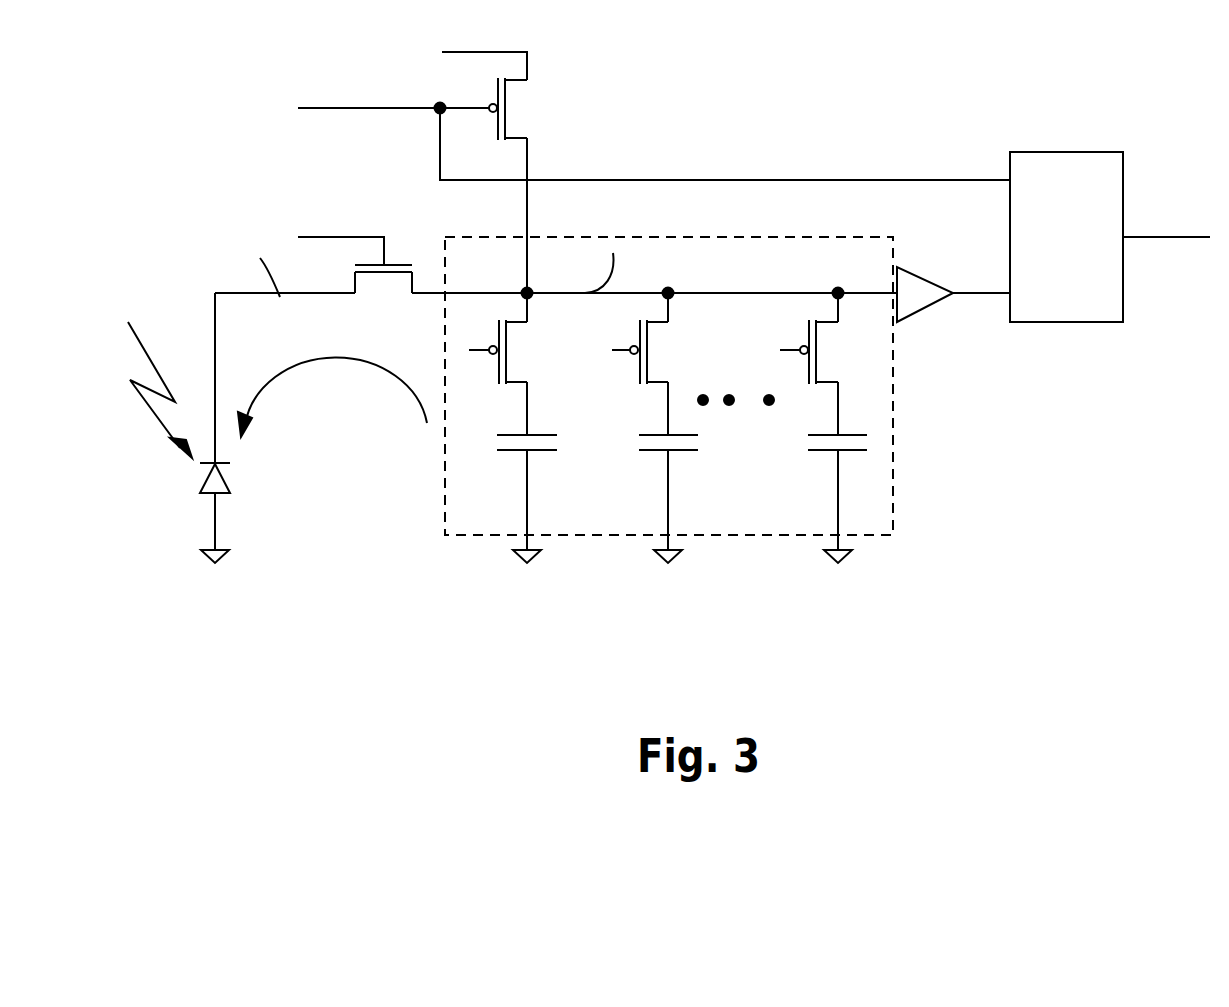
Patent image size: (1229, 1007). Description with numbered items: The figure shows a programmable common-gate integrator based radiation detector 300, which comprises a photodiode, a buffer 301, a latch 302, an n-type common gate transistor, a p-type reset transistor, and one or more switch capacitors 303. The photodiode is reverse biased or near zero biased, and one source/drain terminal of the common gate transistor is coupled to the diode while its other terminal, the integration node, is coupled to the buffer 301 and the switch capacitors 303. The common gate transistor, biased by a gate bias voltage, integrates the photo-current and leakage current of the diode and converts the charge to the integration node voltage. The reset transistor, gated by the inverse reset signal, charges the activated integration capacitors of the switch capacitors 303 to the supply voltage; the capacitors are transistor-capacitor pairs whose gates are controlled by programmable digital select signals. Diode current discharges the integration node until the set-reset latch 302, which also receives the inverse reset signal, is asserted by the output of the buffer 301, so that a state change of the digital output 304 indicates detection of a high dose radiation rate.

The programmable common-gate integrator based radiation detector 300 is at (700, 37).
The buffer 301 is at (928, 307).
The latch 302 is at (1075, 322).
The switch capacitors 303 is at (445, 445).
The output 304 is at (1166, 223).